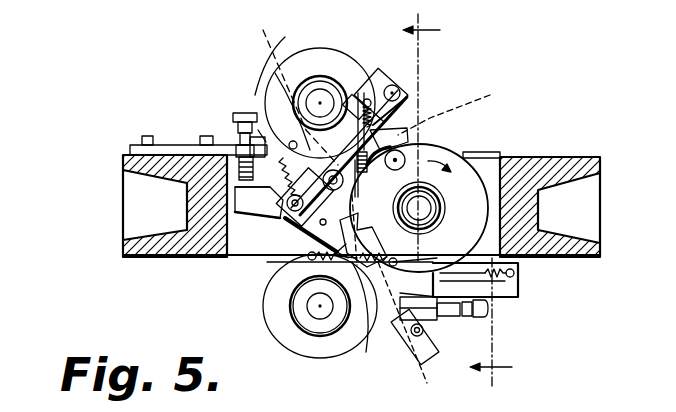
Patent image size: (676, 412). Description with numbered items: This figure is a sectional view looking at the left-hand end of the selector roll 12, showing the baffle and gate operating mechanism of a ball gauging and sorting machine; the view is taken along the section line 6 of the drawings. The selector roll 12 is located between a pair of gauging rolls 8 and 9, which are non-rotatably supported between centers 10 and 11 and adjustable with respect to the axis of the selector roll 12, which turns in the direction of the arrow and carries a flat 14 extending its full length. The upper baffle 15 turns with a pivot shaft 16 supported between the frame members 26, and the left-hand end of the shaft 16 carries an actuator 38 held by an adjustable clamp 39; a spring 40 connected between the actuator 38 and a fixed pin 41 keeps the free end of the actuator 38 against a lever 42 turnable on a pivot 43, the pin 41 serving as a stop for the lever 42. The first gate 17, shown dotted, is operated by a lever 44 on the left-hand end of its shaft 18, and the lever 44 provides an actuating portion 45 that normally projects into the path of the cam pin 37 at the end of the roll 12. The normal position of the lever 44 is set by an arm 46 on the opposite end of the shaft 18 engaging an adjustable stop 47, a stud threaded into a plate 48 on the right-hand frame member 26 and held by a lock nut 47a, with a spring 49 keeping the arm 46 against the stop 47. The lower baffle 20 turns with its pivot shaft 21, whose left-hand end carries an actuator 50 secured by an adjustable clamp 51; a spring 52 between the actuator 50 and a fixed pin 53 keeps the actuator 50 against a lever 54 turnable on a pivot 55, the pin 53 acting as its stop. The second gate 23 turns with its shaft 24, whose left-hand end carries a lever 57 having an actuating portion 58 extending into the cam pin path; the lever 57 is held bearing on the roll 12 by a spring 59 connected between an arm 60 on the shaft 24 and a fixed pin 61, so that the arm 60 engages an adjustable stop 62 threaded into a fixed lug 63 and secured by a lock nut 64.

The section line 6 is at (457, 197).
The gauging roll 8 is at (285, 86).
The gauging roll 9 is at (286, 336).
The center 10 is at (313, 98).
The center 11 is at (322, 319).
The selector roll 12 is at (464, 198).
The flat 14 is at (453, 106).
The baffle 15 is at (376, 124).
The pivot shaft 16 is at (400, 98).
The gate 17 is at (288, 88).
The shaft 18 is at (268, 220).
The baffle 20 is at (323, 225).
The pivot shaft 21 is at (297, 252).
The second gate 23 is at (402, 296).
The shaft 24 is at (434, 322).
The frame member 26 is at (153, 256).
The cam pin 37 is at (410, 142).
The actuator 38 is at (360, 100).
The adjustable clamp 39 is at (392, 86).
The spring 40 is at (325, 95).
The fixed pin 41 is at (372, 172).
The lever 42 is at (405, 130).
The pivot 43 is at (281, 175).
The lever 44 is at (286, 105).
The actuating portion 45 is at (391, 170).
The arm 46 is at (247, 197).
The adjustable stop 47 is at (236, 132).
The lock nut 47a is at (262, 135).
The plate 48 is at (140, 146).
The spring 49 is at (233, 134).
The actuator 50 is at (290, 302).
The adjustable clamp 51 is at (296, 254).
The spring 52 is at (397, 263).
The fixed pin 53 is at (437, 258).
The lever 54 is at (370, 338).
The pivot 55 is at (410, 330).
The lever 57 is at (400, 352).
The actuating portion 58 is at (377, 232).
The spring 59 is at (505, 282).
The arm 60 is at (437, 312).
The fixed pin 61 is at (515, 273).
The adjustable stop 62 is at (489, 307).
The fixed lug 63 is at (518, 295).
The lock nut 64 is at (472, 313).